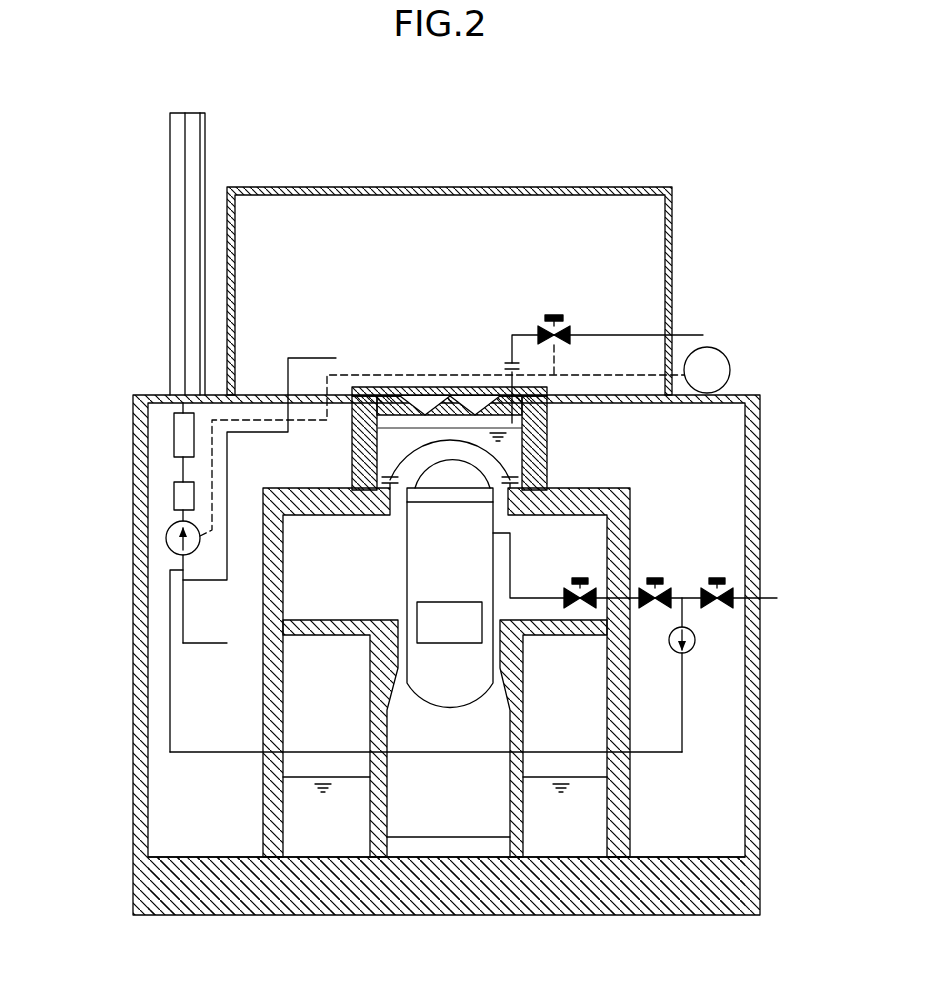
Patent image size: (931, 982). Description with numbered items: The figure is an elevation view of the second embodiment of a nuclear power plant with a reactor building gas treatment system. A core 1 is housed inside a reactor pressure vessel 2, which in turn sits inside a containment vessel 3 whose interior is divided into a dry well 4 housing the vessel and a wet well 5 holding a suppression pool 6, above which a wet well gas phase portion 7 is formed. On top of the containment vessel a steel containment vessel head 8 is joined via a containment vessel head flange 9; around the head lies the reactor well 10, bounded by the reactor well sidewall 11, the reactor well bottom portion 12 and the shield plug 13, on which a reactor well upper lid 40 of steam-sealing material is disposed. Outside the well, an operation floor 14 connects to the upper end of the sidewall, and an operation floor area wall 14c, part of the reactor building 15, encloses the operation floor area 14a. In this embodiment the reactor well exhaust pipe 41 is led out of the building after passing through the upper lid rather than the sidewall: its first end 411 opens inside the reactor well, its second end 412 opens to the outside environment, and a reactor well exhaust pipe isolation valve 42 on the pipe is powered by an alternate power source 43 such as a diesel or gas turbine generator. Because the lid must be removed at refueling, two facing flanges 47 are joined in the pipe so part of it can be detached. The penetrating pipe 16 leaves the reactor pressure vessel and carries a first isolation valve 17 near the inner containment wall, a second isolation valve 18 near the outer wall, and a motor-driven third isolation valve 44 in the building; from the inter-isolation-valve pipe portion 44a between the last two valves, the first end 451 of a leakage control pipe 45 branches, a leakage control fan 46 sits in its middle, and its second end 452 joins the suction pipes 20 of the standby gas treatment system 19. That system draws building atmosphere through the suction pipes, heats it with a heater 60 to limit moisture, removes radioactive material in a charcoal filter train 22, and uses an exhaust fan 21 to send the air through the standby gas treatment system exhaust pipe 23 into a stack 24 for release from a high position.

The core 1 is at (449, 622).
The reactor pressure vessel 2 is at (425, 584).
The containment vessel 3 is at (277, 492).
The dry well 4 is at (345, 567).
The wet well 5 is at (600, 703).
The suppression pool 6 is at (300, 822).
The wet well gas phase portion 7 is at (326, 746).
The containment vessel head 8 is at (454, 440).
The containment vessel head flange 9 is at (386, 490).
The reactor well 10 is at (385, 432).
The reactor well sidewall 11 is at (546, 430).
The reactor well bottom portion 12 is at (535, 515).
The shield plug 13 is at (407, 388).
The operation floor 14 is at (253, 395).
The operation floor area 14a is at (527, 218).
The operation floor area wall 14c is at (672, 218).
The reactor building 15 is at (497, 249).
The penetrating pipe 16 is at (758, 600).
The first isolation valve 17 is at (583, 610).
The second isolation valve 18 is at (672, 587).
The standby gas treatment system 19 is at (124, 528).
The suction pipes 20 is at (308, 358).
The exhaust fan 21 is at (166, 538).
The filter train 22 is at (174, 434).
The standby gas treatment system exhaust pipe 23 is at (189, 185).
The stack 24 is at (170, 217).
The reactor well upper lid 40 is at (380, 387).
The reactor well exhaust pipe 41 is at (641, 320).
The reactor well exhaust pipe isolation valve 42 is at (563, 318).
The alternate power source 43 is at (729, 355).
The third isolation valve 44 is at (724, 585).
The inter-isolation-valve pipe portion 44a is at (693, 588).
The leakage control pipe 45 is at (643, 753).
The leakage control fan 46 is at (700, 655).
The flanges 47 is at (507, 362).
The heater 60 is at (174, 494).
The first end of reactor well exhaust pipe 411 is at (530, 412).
The second end of reactor well exhaust pipe 412 is at (703, 335).
The first end of leakage control pipe 451 is at (677, 603).
The second end of leakage control pipe 452 is at (170, 576).